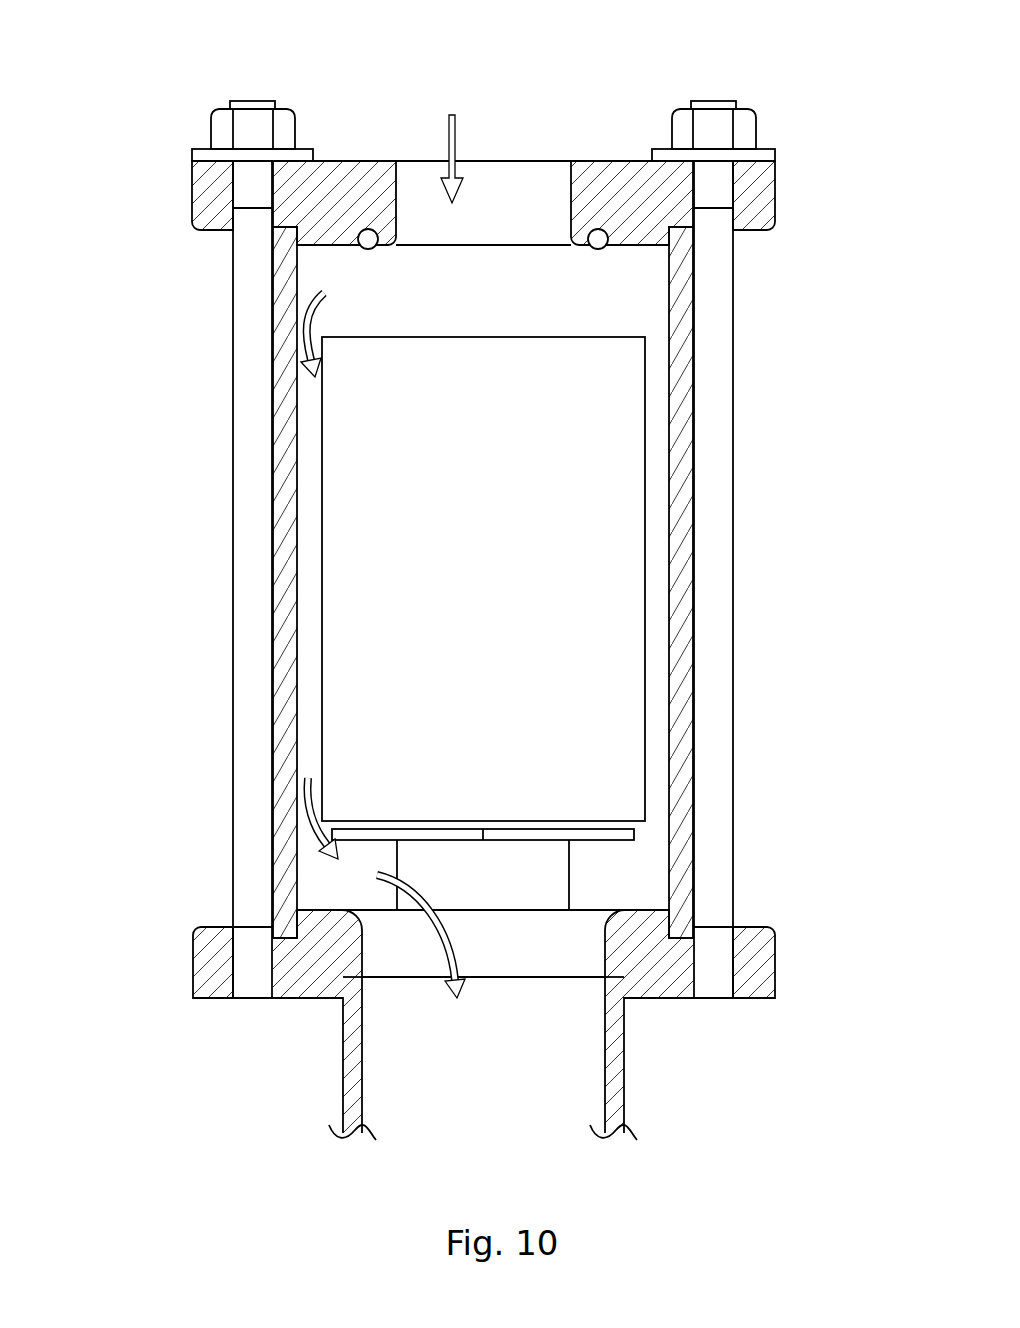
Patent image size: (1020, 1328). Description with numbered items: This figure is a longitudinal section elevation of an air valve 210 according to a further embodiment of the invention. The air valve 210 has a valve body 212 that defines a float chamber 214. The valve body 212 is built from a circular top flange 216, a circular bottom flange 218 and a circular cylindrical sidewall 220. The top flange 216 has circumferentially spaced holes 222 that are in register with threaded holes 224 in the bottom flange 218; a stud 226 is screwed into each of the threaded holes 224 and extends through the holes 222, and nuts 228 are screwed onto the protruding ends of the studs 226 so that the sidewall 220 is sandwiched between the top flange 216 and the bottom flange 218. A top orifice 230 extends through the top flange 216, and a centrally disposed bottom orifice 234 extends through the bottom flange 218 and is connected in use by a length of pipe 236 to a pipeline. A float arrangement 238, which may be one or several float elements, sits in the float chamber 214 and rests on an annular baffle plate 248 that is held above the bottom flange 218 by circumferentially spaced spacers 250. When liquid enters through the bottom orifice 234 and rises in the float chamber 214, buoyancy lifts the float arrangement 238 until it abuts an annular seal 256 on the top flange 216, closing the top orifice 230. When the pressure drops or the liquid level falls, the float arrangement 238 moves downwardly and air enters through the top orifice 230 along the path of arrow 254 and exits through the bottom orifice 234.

The air valve 210 is at (109, 64).
The valve body 212 is at (791, 334).
The float chamber 214 is at (662, 829).
The top flange 216 is at (775, 190).
The bottom flange 218 is at (193, 959).
The sidewall 220 is at (693, 530).
The holes 222 is at (289, 181).
The threaded holes 224 is at (214, 932).
The stud 226 is at (233, 595).
The nuts 228 is at (223, 123).
The top orifice 230 is at (521, 187).
The bottom orifice 234 is at (415, 966).
The pipe 236 is at (624, 1063).
The float arrangement 238 is at (645, 397).
The annular baffle plate 248 is at (348, 843).
The spacers 250 is at (569, 865).
The arrow 254 is at (447, 130).
The annular seal 256 is at (596, 250).